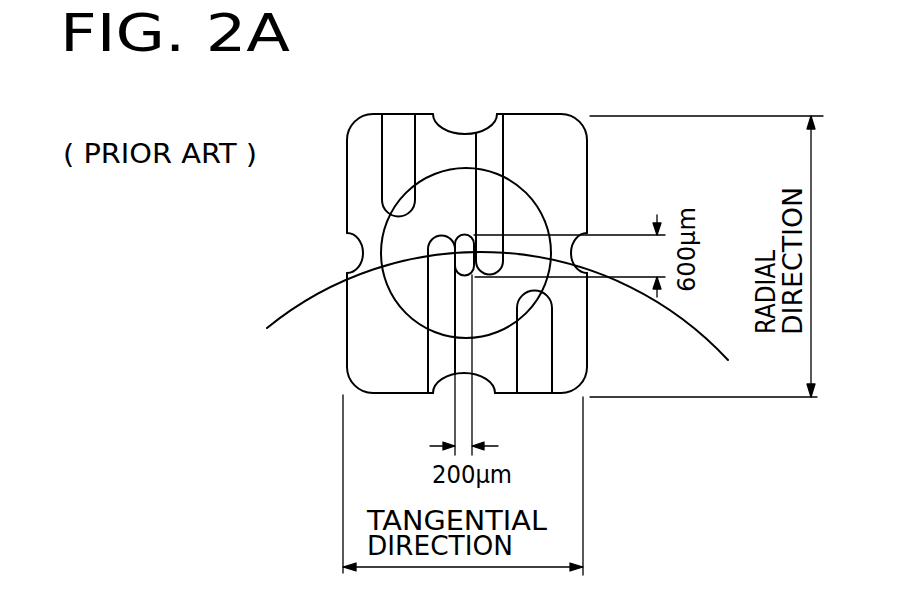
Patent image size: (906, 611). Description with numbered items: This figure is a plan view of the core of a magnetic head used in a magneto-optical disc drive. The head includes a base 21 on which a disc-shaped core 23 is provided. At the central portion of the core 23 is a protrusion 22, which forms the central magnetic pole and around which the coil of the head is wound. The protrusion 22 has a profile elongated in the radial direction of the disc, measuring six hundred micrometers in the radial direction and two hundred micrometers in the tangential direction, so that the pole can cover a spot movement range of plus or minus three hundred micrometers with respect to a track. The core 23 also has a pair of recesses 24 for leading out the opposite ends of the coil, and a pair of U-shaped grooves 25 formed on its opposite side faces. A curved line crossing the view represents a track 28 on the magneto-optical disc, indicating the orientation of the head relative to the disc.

The base 21 is at (590, 146).
The protrusion 22 is at (465, 243).
The core 23 is at (395, 284).
The recesses 24 is at (400, 130).
The U-shaped grooves 25 is at (486, 127).
The track 28 is at (675, 333).